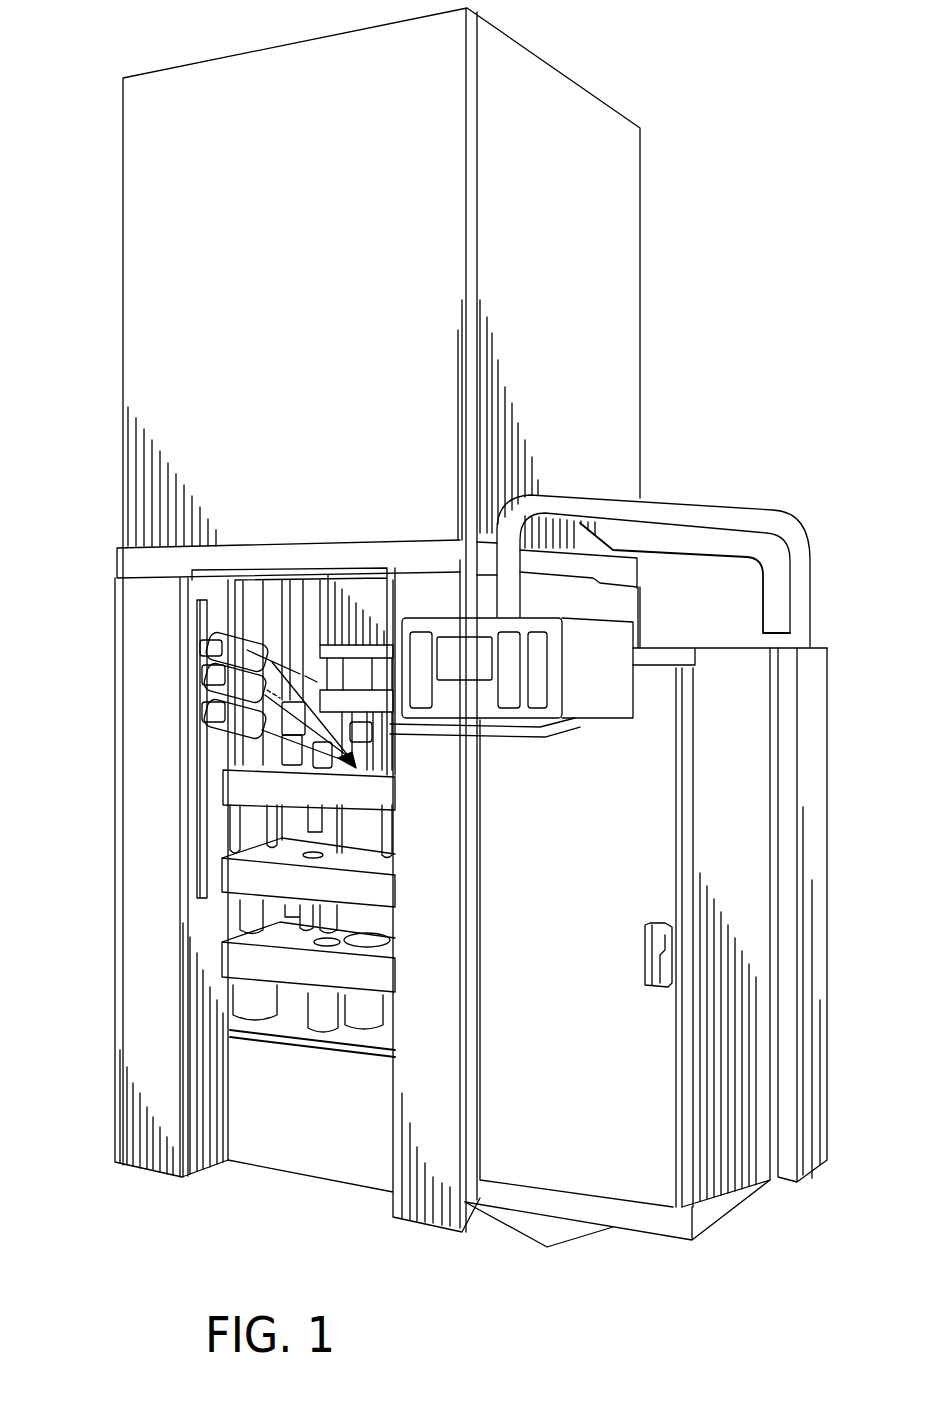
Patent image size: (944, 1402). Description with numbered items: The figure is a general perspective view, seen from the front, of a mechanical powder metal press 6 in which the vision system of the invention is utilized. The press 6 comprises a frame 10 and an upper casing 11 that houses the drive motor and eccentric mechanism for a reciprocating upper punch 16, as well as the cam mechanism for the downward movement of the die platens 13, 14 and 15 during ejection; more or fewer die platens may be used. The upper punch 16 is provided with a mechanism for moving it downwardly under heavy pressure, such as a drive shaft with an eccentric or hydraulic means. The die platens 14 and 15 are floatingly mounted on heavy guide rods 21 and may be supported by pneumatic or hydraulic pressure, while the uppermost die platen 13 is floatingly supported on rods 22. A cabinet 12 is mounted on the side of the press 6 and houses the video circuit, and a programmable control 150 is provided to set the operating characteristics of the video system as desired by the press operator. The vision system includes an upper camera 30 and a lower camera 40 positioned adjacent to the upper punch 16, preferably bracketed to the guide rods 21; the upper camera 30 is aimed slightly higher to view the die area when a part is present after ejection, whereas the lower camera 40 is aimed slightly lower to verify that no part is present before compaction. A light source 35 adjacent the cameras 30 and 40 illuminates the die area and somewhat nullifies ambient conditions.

The mechanical powder metal press 6 is at (640, 375).
The frame 10 is at (150, 847).
The upper casing 11 is at (172, 305).
The cabinet 12 is at (613, 848).
The uppermost die platen 13 is at (372, 790).
The die platen 14 is at (372, 890).
The die platen 15 is at (370, 975).
The upper punch 16 is at (363, 727).
The guide rods 21 is at (255, 583).
The rods 22 is at (295, 583).
The upper camera 30 is at (267, 685).
The light source 35 is at (238, 646).
The lower camera 40 is at (222, 722).
The programmable control 150 is at (588, 690).